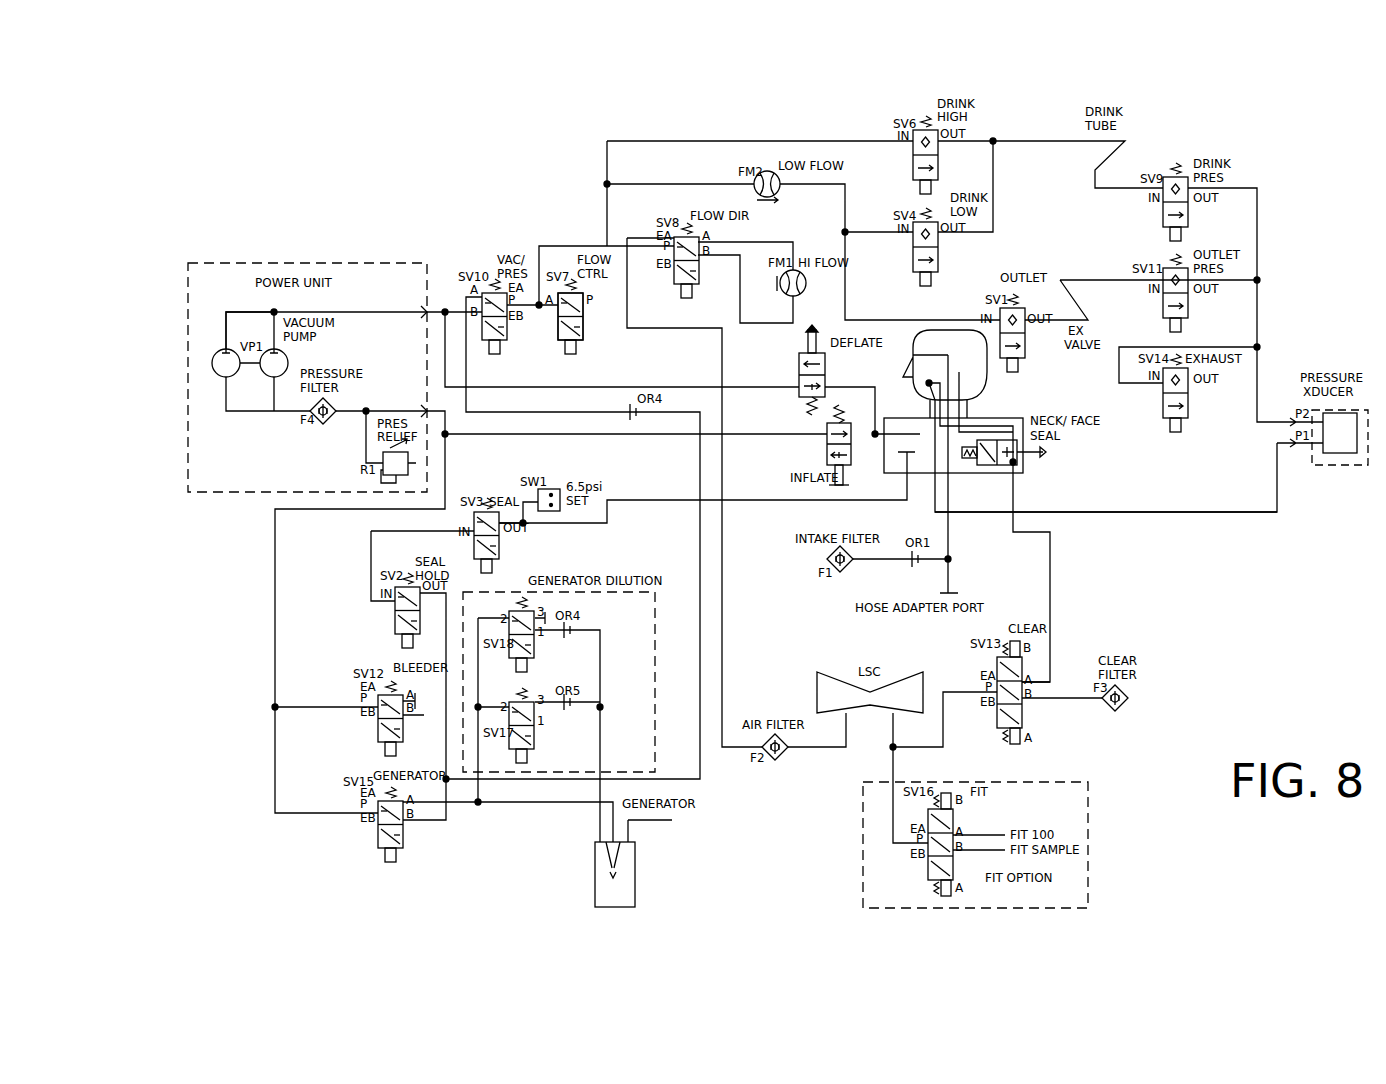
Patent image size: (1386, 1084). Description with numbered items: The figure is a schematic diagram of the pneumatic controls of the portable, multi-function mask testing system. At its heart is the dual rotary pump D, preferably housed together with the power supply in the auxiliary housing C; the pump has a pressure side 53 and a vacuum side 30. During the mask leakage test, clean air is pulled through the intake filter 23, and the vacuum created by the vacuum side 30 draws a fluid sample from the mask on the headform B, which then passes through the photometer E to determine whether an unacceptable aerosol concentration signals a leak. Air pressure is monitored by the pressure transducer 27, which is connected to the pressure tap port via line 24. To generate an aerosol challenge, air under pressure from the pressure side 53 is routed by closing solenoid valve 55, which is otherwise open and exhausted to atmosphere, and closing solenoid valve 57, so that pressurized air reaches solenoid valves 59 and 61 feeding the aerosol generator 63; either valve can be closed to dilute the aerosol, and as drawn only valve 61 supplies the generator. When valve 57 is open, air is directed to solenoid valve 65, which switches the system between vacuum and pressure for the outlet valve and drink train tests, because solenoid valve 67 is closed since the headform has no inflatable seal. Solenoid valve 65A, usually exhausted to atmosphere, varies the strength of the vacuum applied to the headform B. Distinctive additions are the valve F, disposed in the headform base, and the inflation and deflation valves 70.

The auxiliary housing C is at (345, 262).
The dual rotary pump D is at (230, 302).
The pressure side 53 is at (212, 364).
The vacuum side 30 is at (290, 358).
The solenoid valve 65 is at (500, 350).
The solenoid valve 65A is at (582, 345).
The inflation and deflation valves 70 is at (799, 368).
The headform B is at (995, 385).
The valve F is at (1045, 455).
The pressure transducer 27 is at (1348, 472).
The line 24 is at (1200, 512).
The intake filter 23 is at (827, 559).
The solenoid valve 67 is at (395, 627).
The solenoid valve 55 is at (378, 740).
The solenoid valve 57 is at (378, 846).
The solenoid valve 59 is at (535, 655).
The solenoid valve 61 is at (535, 745).
The aerosol generator 63 is at (635, 880).
The photometer E is at (835, 672).